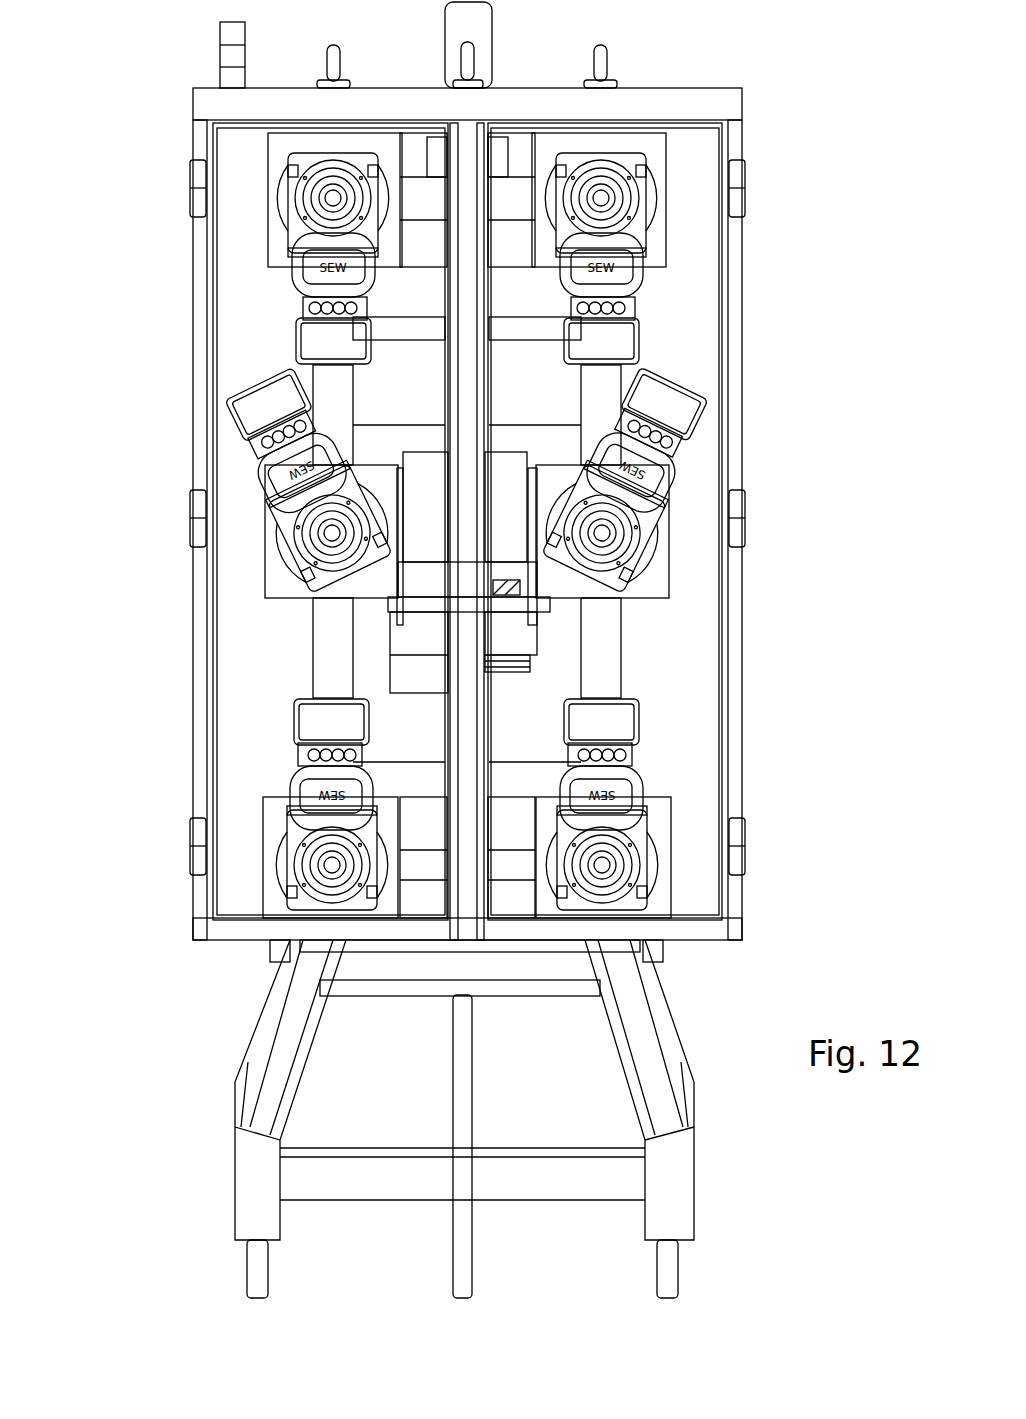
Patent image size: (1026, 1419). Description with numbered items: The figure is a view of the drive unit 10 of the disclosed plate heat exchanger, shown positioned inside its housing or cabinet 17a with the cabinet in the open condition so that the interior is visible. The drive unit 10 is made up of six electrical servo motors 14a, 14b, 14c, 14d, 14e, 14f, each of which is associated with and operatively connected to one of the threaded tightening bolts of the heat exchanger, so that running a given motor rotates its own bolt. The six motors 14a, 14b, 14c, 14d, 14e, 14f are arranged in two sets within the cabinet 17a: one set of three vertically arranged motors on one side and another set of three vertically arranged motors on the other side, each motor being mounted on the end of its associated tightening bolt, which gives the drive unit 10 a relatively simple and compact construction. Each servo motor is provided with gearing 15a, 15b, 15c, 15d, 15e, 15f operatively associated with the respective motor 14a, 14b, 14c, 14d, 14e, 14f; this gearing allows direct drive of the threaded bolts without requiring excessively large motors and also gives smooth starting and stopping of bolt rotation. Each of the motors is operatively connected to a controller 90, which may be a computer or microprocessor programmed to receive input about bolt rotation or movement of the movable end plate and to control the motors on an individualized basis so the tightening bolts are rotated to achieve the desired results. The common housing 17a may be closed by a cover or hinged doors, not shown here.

The drive unit 10 is at (663, 88).
The housing or cabinet 17a is at (742, 153).
The controller 90 is at (505, 450).
The motor 14a is at (292, 288).
The motor 14b is at (266, 470).
The motor 14c is at (303, 772).
The motor 14d is at (646, 292).
The motor 14e is at (680, 488).
The motor 14f is at (644, 778).
The gearing 15a is at (280, 228).
The gearing 15b is at (266, 562).
The gearing 15c is at (263, 863).
The gearing 15d is at (668, 234).
The gearing 15e is at (670, 580).
The gearing 15f is at (669, 835).